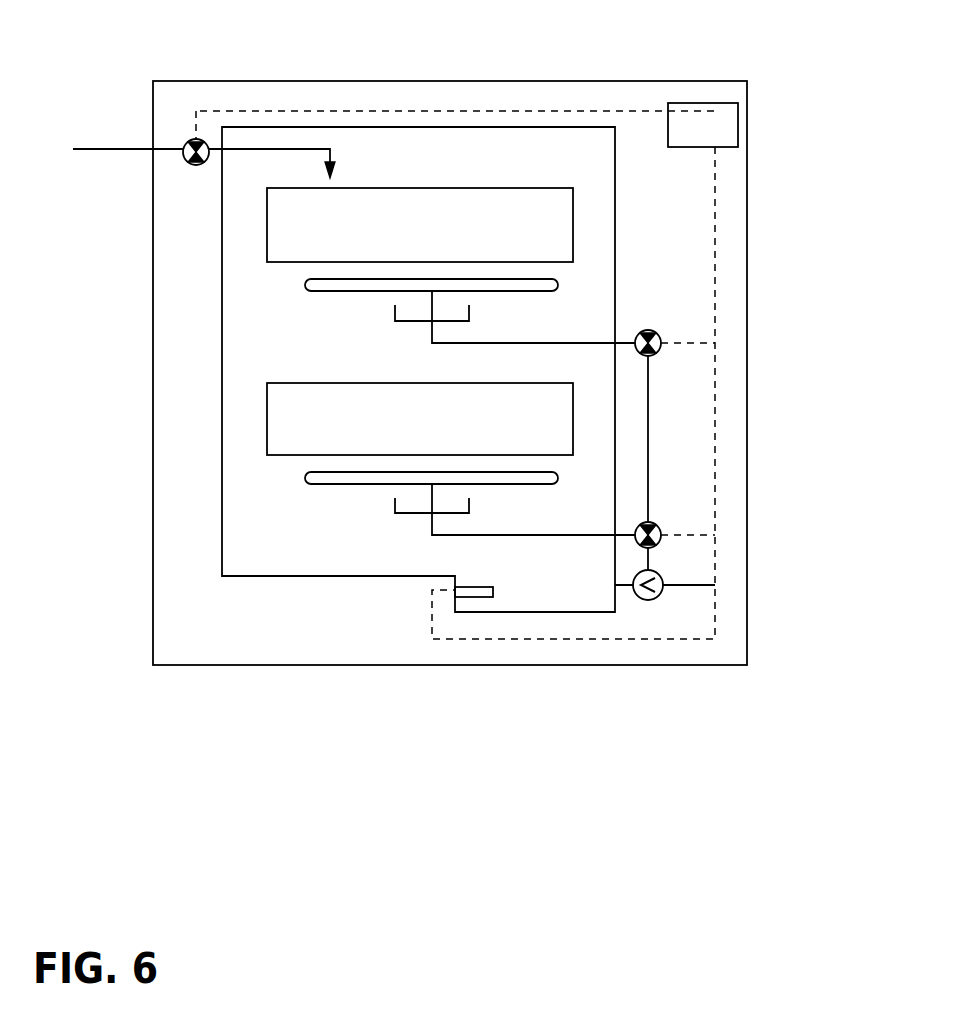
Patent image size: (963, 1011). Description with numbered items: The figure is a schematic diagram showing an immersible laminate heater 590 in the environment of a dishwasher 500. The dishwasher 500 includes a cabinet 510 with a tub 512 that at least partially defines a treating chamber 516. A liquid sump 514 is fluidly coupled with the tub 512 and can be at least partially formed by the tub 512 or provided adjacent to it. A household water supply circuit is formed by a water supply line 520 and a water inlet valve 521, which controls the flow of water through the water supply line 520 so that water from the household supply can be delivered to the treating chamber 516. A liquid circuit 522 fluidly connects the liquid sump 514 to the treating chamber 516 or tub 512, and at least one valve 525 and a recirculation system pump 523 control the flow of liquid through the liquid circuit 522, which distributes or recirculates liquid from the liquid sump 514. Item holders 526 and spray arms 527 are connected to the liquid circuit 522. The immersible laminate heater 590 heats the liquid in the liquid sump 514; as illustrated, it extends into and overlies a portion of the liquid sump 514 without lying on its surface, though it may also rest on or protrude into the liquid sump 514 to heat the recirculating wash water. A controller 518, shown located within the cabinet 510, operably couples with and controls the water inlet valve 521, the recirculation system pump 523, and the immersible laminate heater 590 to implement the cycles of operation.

The dishwasher 500 is at (481, 39).
The cabinet 510 is at (747, 210).
The tub 512 is at (615, 303).
The liquid sump 514 is at (543, 612).
The treating chamber 516 is at (499, 328).
The controller 518 is at (738, 127).
The water supply line 520 is at (108, 148).
The water inlet valve 521 is at (196, 139).
The liquid circuit 522 is at (648, 432).
The recirculation system pump 523 is at (657, 597).
The valve 525 is at (659, 336).
The item holders 526 is at (267, 231).
The spray arms 527 is at (337, 297).
The immersible laminate heater 590 is at (478, 597).